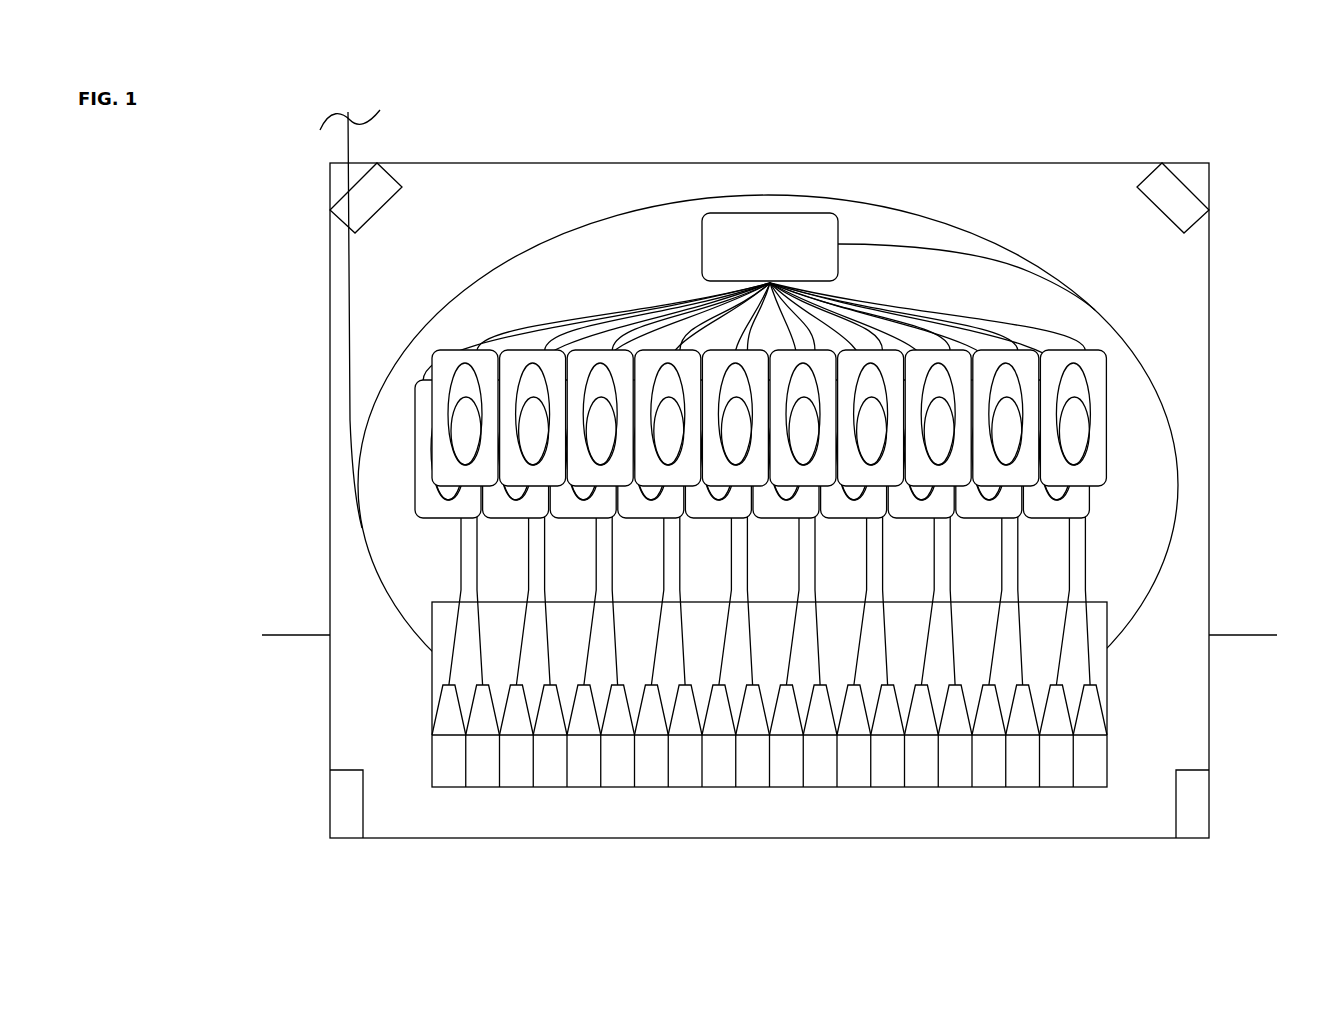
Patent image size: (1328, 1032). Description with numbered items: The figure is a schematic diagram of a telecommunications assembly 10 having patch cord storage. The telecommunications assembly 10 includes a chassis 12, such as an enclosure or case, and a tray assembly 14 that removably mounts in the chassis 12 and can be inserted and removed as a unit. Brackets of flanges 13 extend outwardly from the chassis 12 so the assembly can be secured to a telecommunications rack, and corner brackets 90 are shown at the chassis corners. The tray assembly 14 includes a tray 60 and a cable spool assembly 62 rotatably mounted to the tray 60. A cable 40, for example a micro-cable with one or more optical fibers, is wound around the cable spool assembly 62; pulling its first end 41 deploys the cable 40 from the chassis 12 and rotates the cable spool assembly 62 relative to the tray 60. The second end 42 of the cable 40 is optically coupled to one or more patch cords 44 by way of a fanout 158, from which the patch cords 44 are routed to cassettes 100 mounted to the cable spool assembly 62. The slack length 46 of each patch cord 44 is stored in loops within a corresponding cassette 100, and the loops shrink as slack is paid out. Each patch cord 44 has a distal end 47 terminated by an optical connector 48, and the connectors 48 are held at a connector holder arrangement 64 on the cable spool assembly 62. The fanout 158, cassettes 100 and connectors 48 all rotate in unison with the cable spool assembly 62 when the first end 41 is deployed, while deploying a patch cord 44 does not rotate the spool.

The telecommunications assembly 10 is at (963, 153).
The chassis 12 is at (1213, 272).
The brackets of flanges 13 is at (288, 638).
The tray assembly 14 is at (546, 243).
The cable 40 is at (352, 313).
The first end 41 is at (345, 135).
The second end 42 is at (771, 249).
The patch cord 44 is at (958, 336).
The slack length 46 is at (518, 453).
The distal end 47 is at (455, 685).
The optical connector 48 is at (445, 772).
The tray 60 is at (1075, 215).
The cable spool assembly 62 is at (1163, 406).
The connector holder arrangement 64 is at (1105, 680).
The mounting brackets 90 is at (372, 183).
The cassette 100 is at (473, 350).
The fanout 158 is at (702, 251).